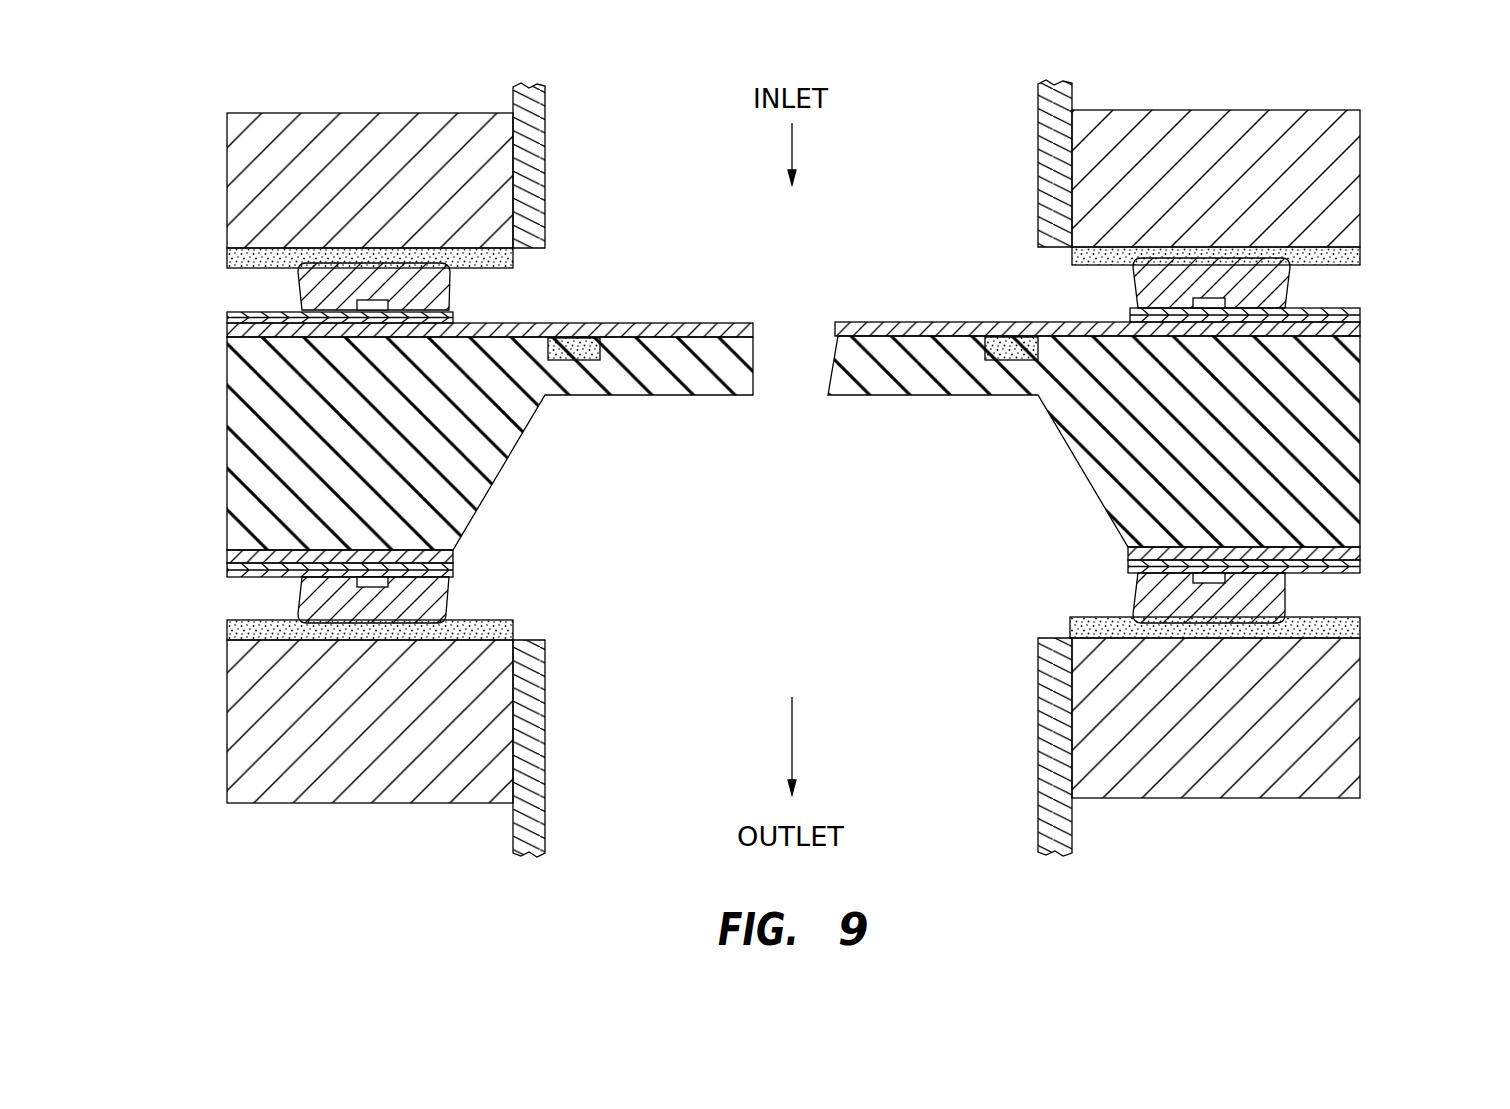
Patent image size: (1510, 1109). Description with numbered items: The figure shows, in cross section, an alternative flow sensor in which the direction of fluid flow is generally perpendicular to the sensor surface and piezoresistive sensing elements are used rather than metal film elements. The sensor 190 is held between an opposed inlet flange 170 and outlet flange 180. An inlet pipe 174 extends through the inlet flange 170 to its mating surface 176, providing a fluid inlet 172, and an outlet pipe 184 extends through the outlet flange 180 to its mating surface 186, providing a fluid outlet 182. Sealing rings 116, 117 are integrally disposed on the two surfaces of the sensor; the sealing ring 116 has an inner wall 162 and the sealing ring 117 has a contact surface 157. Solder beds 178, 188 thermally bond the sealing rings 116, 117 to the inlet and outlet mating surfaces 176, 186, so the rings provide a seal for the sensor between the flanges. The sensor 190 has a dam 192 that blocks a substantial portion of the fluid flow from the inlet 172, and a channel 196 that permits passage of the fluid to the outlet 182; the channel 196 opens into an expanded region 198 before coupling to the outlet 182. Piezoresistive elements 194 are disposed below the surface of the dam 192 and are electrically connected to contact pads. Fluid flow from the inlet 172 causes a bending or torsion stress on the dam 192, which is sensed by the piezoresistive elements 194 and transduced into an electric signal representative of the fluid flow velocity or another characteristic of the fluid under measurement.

The sealing ring 116 is at (1275, 295).
The sealing ring 117 is at (1275, 600).
The contact surface 157 is at (415, 625).
The inner wall 162 is at (450, 286).
The inlet flange 170 is at (1400, 160).
The fluid inlet 172 is at (947, 112).
The inlet pipe 174 is at (540, 131).
The mating surface 176 is at (227, 266).
The solder bed 178 is at (268, 262).
The outlet flange 180 is at (1378, 772).
The fluid outlet 182 is at (926, 723).
The outlet pipe 184 is at (1038, 800).
The mating surface 186 is at (1092, 624).
The solder bed 188 is at (230, 627).
The sensor 190 is at (200, 399).
The dam 192 is at (688, 322).
The piezoresistive elements 194 is at (573, 345).
The channel 196 is at (789, 392).
The expanded region 198 is at (955, 532).